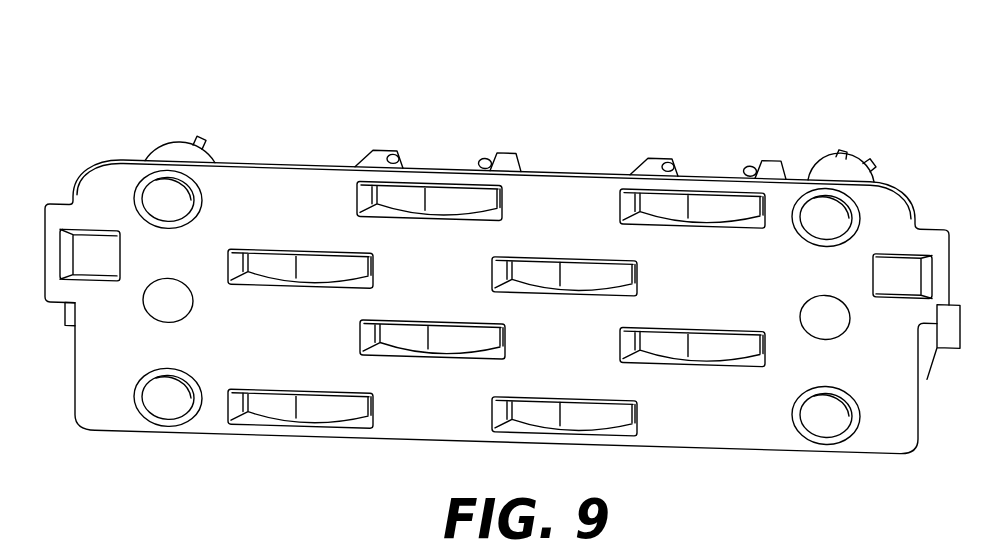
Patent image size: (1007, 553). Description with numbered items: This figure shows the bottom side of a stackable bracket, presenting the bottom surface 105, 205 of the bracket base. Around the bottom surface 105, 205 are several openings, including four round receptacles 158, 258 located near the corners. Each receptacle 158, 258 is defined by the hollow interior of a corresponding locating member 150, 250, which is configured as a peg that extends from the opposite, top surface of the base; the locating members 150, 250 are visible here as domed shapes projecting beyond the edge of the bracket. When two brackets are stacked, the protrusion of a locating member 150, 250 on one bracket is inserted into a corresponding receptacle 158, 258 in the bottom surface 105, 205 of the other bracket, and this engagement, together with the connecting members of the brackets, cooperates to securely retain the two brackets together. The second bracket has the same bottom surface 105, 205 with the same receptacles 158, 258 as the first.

The bottom surface 105 is at (502, 291).
The bottom surface 205 is at (468, 296).
The locating member 150 is at (191, 92).
The locating member 250 is at (176, 132).
The receptacle 158 is at (283, 154).
The receptacle 258 is at (207, 209).